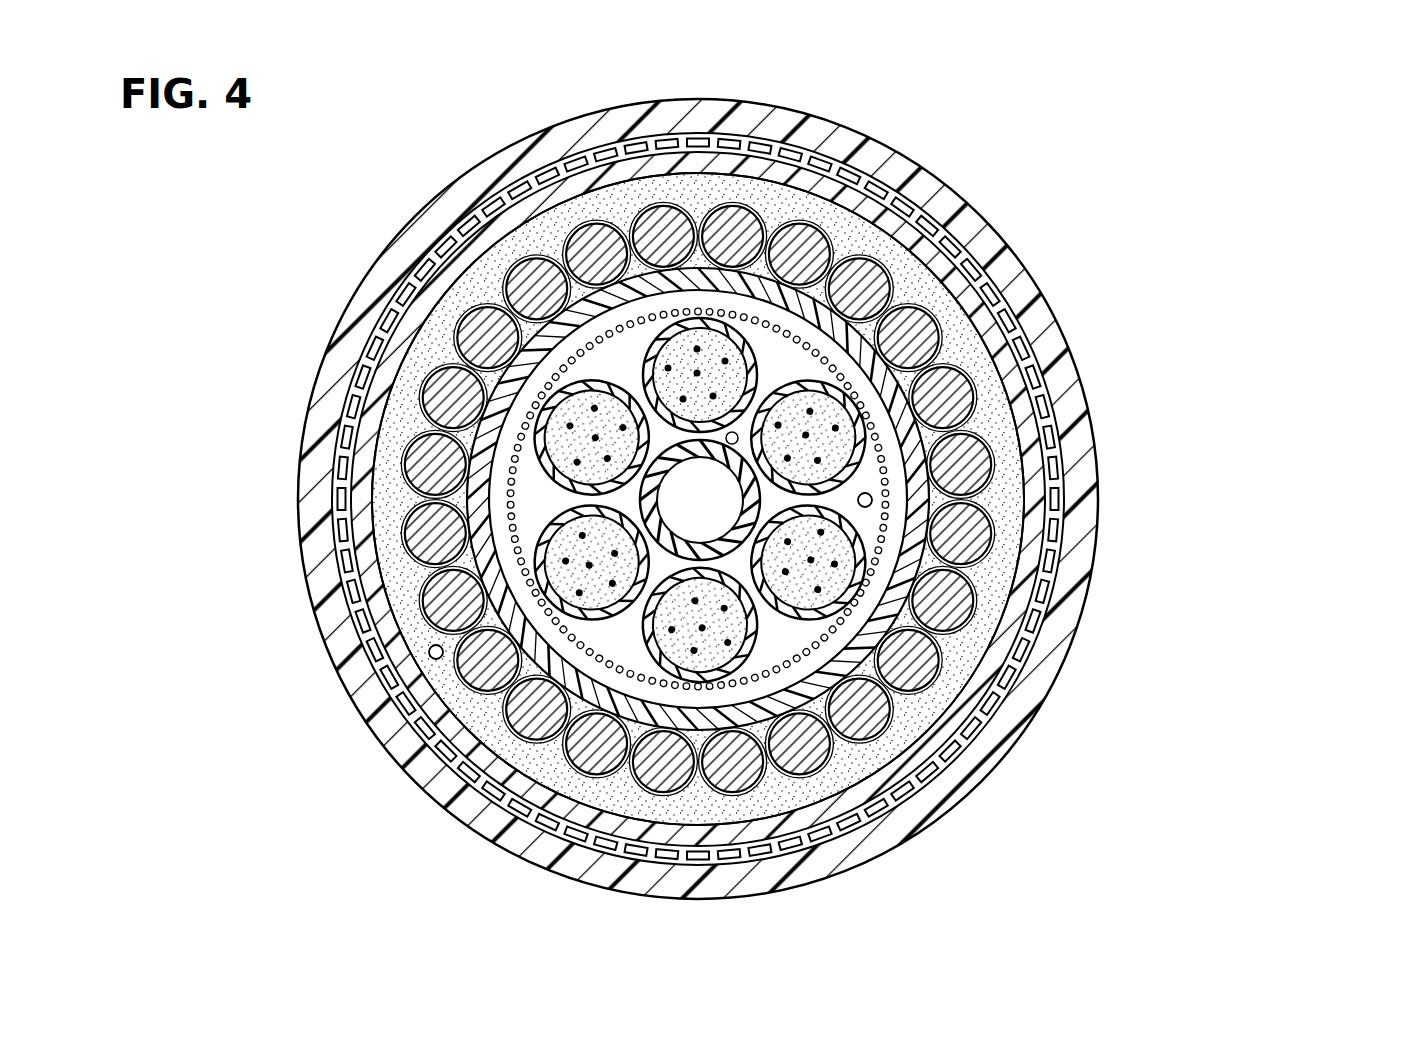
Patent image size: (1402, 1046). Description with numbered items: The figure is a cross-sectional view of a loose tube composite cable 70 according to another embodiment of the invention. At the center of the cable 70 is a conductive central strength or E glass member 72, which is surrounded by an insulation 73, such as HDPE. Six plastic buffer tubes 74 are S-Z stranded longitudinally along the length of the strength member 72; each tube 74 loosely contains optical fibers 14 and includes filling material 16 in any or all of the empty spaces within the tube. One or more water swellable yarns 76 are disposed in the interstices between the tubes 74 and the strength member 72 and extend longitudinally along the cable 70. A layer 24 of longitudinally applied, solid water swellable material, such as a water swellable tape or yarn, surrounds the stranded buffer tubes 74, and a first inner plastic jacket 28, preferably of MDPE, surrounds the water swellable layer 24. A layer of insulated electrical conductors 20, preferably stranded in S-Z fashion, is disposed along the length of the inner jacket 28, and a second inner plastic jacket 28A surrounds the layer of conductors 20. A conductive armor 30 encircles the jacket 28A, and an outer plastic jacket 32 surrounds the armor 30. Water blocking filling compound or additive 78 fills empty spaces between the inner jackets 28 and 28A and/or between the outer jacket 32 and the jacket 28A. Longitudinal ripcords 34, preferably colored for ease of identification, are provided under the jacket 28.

The composite cable 70 is at (888, 138).
The outer plastic jacket 32 is at (373, 290).
The conductive armor 30 is at (493, 197).
The second inner plastic jacket 28A is at (383, 380).
The first inner plastic jacket 28 is at (405, 623).
The water blocking filling compound 78 is at (387, 455).
The insulated electrical conductors 20 is at (447, 610).
The water swellable layer 24 is at (511, 523).
The central strength member 72 is at (684, 505).
The filling material 16 is at (662, 352).
The optical fibers 14 is at (830, 425).
The insulation 73 is at (678, 617).
The plastic buffer tubes 74 is at (808, 610).
The water swellable yarns 76 is at (742, 432).
The ripcords 34 is at (872, 500).